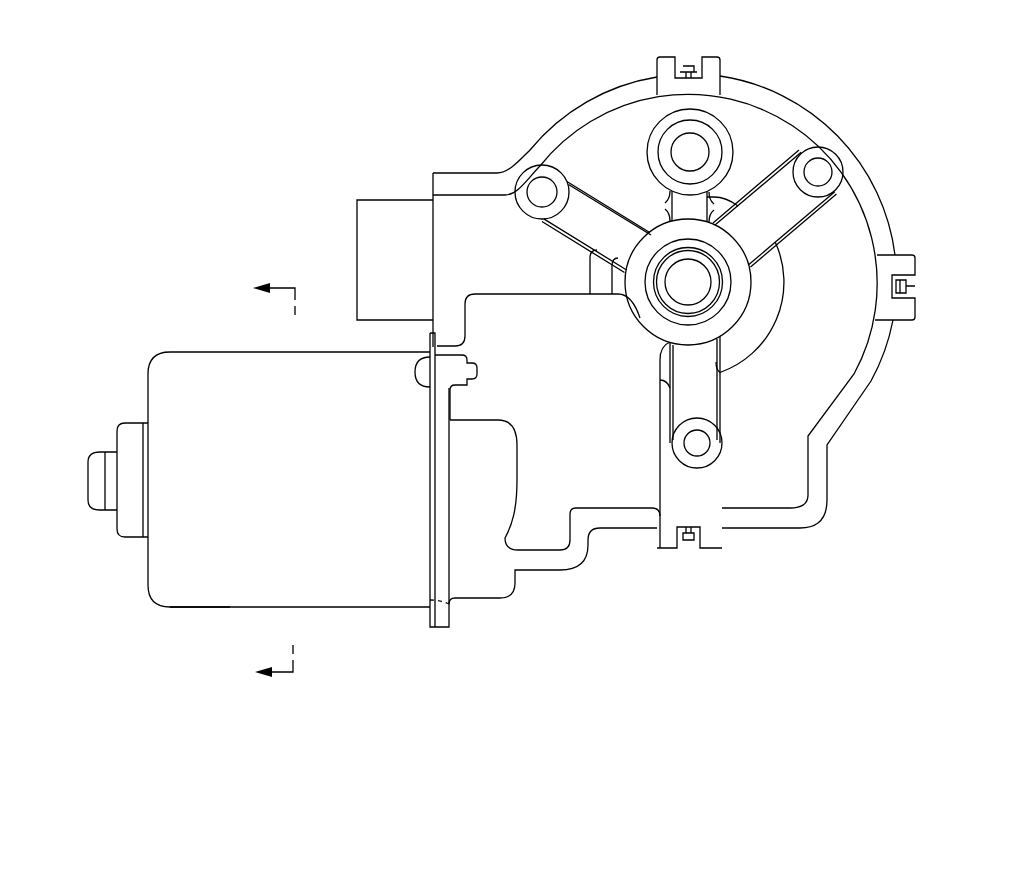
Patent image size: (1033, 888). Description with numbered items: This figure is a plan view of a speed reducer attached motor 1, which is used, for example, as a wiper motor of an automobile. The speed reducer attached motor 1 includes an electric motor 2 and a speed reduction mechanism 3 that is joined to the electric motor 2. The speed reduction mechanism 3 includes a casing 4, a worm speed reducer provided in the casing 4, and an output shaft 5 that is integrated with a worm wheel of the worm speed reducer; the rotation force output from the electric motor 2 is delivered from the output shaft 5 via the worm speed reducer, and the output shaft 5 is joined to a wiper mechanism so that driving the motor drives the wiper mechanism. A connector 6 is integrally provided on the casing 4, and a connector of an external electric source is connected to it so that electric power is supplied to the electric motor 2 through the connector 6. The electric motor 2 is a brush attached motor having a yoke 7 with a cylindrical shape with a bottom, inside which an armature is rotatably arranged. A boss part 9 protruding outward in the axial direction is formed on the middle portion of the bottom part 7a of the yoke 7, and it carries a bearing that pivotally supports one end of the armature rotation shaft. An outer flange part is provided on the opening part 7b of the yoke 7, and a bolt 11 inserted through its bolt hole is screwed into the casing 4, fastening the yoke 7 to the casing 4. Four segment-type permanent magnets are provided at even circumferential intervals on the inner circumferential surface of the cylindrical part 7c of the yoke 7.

The speed reducer attached motor 1 is at (812, 93).
The electric motor 2 is at (360, 608).
The speed reduction mechanism 3 is at (760, 536).
The casing 4 is at (876, 386).
The output shaft 5 is at (675, 255).
The connector 6 is at (386, 200).
The yoke 7 is at (148, 389).
The bottom part 7a is at (148, 560).
The opening part 7b is at (410, 582).
The cylindrical part 7c is at (198, 596).
The boss part 9 is at (88, 482).
The bolt 11 is at (417, 370).